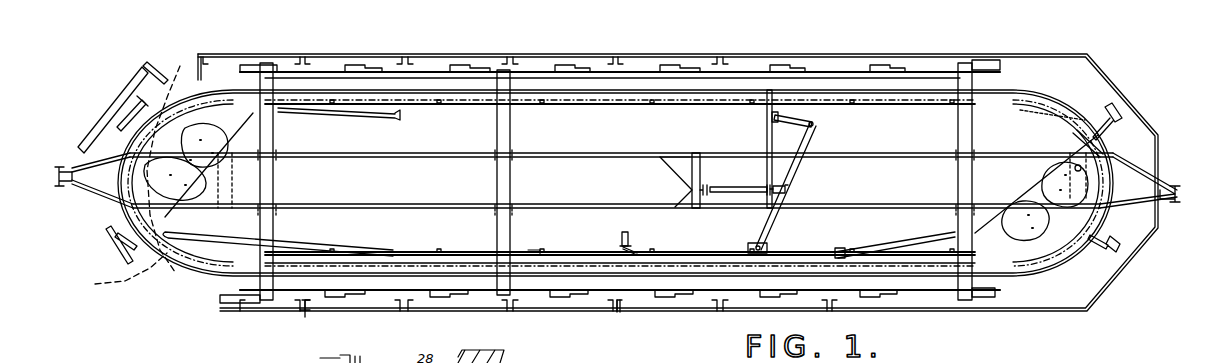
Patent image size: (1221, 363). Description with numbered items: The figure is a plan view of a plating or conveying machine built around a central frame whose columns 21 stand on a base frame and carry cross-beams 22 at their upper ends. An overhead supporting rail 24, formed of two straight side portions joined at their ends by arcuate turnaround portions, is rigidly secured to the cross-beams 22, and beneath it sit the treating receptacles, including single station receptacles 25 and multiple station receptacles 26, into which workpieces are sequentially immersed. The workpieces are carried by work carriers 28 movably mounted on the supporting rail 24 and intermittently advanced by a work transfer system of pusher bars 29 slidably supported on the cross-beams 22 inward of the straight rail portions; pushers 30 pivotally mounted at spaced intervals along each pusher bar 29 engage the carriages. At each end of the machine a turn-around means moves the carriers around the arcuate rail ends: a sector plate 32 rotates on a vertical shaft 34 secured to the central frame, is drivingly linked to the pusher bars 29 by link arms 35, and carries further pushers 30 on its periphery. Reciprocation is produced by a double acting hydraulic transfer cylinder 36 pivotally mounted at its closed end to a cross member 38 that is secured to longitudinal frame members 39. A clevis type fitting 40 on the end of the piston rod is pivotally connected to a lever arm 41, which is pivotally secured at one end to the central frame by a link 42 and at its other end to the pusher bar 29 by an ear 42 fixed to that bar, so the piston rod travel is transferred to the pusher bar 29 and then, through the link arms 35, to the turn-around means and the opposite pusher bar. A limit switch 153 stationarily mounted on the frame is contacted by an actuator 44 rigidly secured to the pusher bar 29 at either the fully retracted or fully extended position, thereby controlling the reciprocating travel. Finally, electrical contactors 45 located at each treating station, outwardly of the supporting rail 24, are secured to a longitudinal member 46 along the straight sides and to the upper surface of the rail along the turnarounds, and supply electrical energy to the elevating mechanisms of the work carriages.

The columns 21 is at (55, 190).
The cross-beams 22 is at (303, 181).
The supporting rail 24 is at (1047, 97).
The single station receptacles 25 is at (300, 312).
The multiple station receptacles 26 is at (1105, 283).
The work carriers 28 is at (178, 67).
The pusher bars 29 is at (612, 105).
The pushers 30 is at (437, 106).
The sector plate 32 is at (262, 188).
The vertical shaft 34 is at (268, 197).
The link arms 35 is at (340, 128).
The transfer cylinder 36 is at (715, 186).
The cross member 38 is at (703, 158).
The longitudinal frame members 39 is at (622, 156).
The clevis type fitting 40 is at (786, 190).
The lever arm 41 is at (790, 172).
The link and ear 42 is at (800, 118).
The actuator 44 is at (640, 250).
The contactors 45 is at (372, 64).
The longitudinal member 46 is at (408, 76).
The limit switch LS3 153 is at (630, 233).